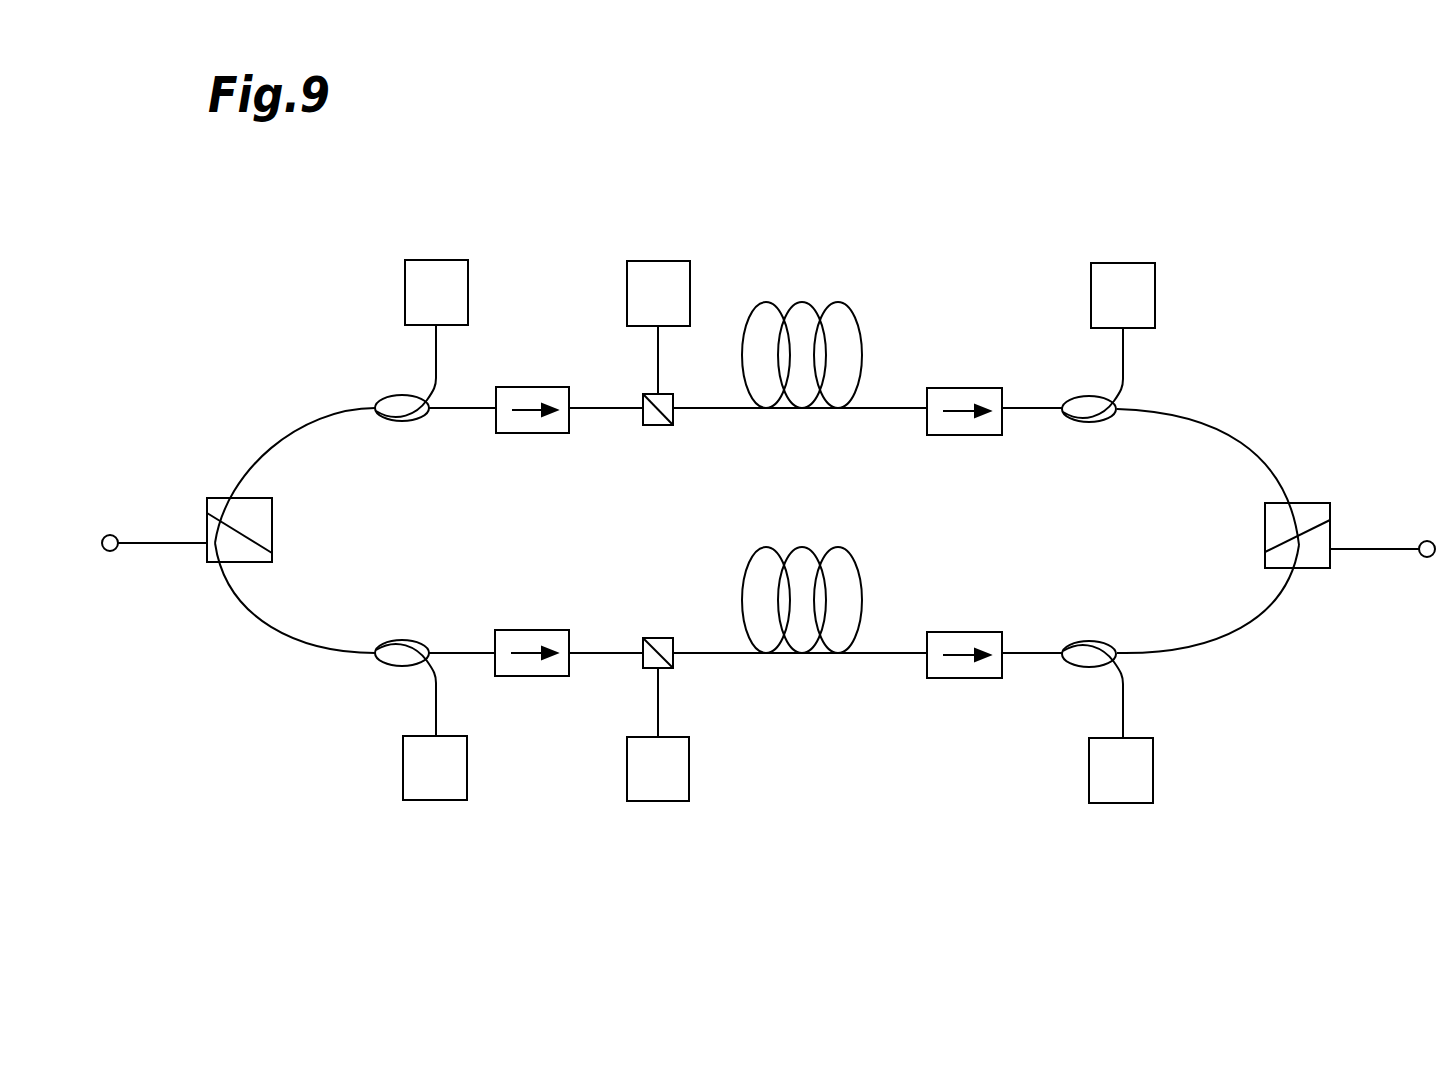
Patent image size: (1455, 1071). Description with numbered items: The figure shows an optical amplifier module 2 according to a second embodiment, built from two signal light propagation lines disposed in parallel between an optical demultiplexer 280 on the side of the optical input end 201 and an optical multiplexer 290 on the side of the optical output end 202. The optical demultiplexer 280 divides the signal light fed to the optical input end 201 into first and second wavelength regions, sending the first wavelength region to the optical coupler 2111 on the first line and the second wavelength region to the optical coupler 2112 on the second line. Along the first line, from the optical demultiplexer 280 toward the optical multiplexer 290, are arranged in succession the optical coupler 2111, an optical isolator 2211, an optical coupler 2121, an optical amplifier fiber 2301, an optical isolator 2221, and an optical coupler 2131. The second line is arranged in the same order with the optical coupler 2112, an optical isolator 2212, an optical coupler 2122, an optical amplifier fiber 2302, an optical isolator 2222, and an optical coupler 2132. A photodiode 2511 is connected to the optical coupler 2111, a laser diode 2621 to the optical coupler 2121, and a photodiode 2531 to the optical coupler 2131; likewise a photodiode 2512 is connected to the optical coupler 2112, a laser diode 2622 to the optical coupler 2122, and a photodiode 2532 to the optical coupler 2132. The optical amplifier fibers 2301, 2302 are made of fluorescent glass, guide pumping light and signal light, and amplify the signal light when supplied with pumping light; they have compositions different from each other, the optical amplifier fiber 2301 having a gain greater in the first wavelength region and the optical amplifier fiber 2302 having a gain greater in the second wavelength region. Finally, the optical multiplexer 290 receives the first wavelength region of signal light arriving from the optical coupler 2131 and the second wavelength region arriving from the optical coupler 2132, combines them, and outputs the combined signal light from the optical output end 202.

The optical amplifier module 2 is at (988, 200).
The optical input end 201 is at (110, 535).
The optical output end 202 is at (1427, 541).
The optical demultiplexer 280 is at (220, 563).
The optical multiplexer 290 is at (1320, 570).
The optical coupler 2111 is at (402, 423).
The optical coupler 2112 is at (402, 640).
The optical coupler 2121 is at (658, 425).
The optical coupler 2122 is at (658, 638).
The optical coupler 2131 is at (1088, 424).
The optical coupler 2132 is at (1088, 642).
The optical isolator 2211 is at (530, 433).
The optical isolator 2212 is at (530, 630).
The optical isolator 2221 is at (965, 435).
The optical isolator 2222 is at (965, 632).
The optical amplifier fiber 2301 is at (838, 302).
The optical amplifier fiber 2302 is at (838, 547).
The photodiode 2511 is at (437, 260).
The photodiode 2512 is at (435, 800).
The photodiode 2531 is at (1122, 263).
The photodiode 2532 is at (1122, 803).
The laser diode 2621 is at (658, 261).
The laser diode 2622 is at (658, 801).